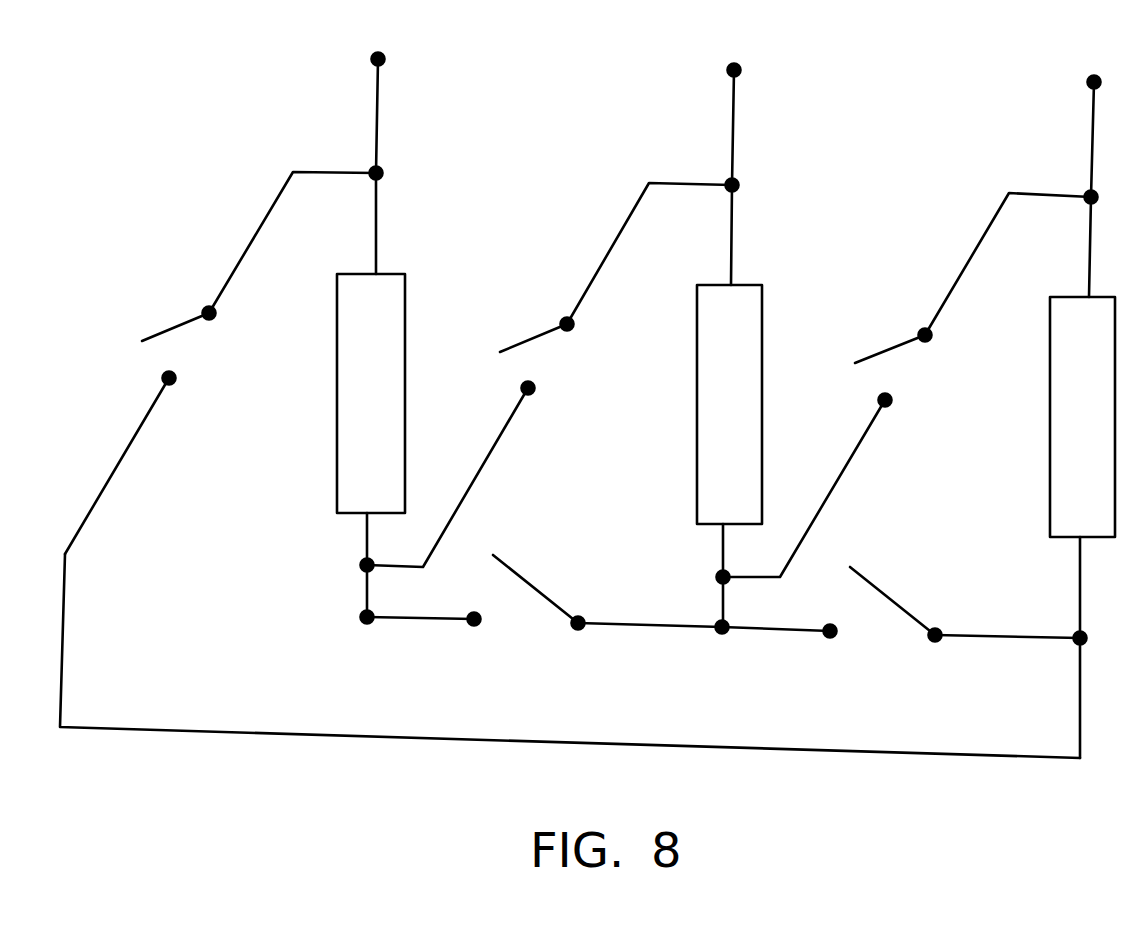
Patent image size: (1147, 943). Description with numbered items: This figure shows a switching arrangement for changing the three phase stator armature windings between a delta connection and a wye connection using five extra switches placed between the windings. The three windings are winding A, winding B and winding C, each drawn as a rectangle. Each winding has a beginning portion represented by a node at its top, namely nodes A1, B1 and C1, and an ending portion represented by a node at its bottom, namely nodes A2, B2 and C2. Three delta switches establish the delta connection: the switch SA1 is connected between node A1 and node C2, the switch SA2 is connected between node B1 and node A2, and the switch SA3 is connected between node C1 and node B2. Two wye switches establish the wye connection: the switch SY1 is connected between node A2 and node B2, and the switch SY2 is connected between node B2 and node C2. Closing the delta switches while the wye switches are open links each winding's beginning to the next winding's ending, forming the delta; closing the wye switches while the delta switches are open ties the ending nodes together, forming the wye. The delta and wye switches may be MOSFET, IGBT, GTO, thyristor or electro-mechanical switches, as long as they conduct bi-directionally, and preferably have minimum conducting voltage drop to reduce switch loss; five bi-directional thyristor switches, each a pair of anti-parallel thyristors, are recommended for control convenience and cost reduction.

The beginning node of winding A A1 is at (383, 95).
The ending node of winding A A2 is at (369, 642).
The beginning node of winding B B1 is at (740, 106).
The ending node of winding B B2 is at (724, 652).
The beginning node of winding C C1 is at (1101, 117).
The ending node of winding C C2 is at (1103, 650).
The armature winding A is at (362, 420).
The armature winding B is at (717, 432).
The armature winding C is at (1075, 443).
The delta switch SΔ1 SA1 is at (220, 363).
The delta switch SΔ2 SA2 is at (616, 289).
The delta switch SΔ3 SA3 is at (973, 300).
The wye switch SY1 is at (520, 615).
The wye switch SY2 is at (874, 627).